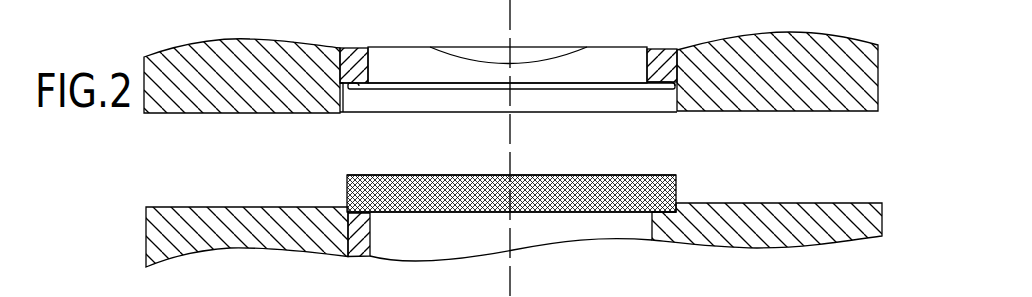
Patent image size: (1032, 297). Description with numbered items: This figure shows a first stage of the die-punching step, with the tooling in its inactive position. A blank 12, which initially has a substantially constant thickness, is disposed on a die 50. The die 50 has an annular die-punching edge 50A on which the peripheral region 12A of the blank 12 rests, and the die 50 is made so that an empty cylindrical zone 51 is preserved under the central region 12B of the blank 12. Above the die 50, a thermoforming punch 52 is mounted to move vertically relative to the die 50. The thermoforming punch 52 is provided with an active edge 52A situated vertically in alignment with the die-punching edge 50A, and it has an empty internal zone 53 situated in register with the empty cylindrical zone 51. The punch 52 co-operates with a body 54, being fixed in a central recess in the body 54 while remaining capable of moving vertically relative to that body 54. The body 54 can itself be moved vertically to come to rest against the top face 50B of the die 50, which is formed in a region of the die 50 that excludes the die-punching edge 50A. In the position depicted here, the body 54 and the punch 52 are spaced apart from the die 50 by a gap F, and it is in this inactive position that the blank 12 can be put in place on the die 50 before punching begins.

The blank 12 is at (632, 175).
The peripheral region 12A is at (347, 190).
The central region 12B is at (590, 213).
The die 50 is at (208, 220).
The die-punching edge 50A is at (350, 218).
The top face 50B is at (800, 203).
The empty cylindrical zone 51 is at (442, 246).
The thermoforming punch 52 is at (651, 49).
The active edge 52A is at (348, 89).
The empty internal zone 53 is at (607, 70).
The body 54 is at (200, 94).
The gap between cap and substrate F is at (544, 136).